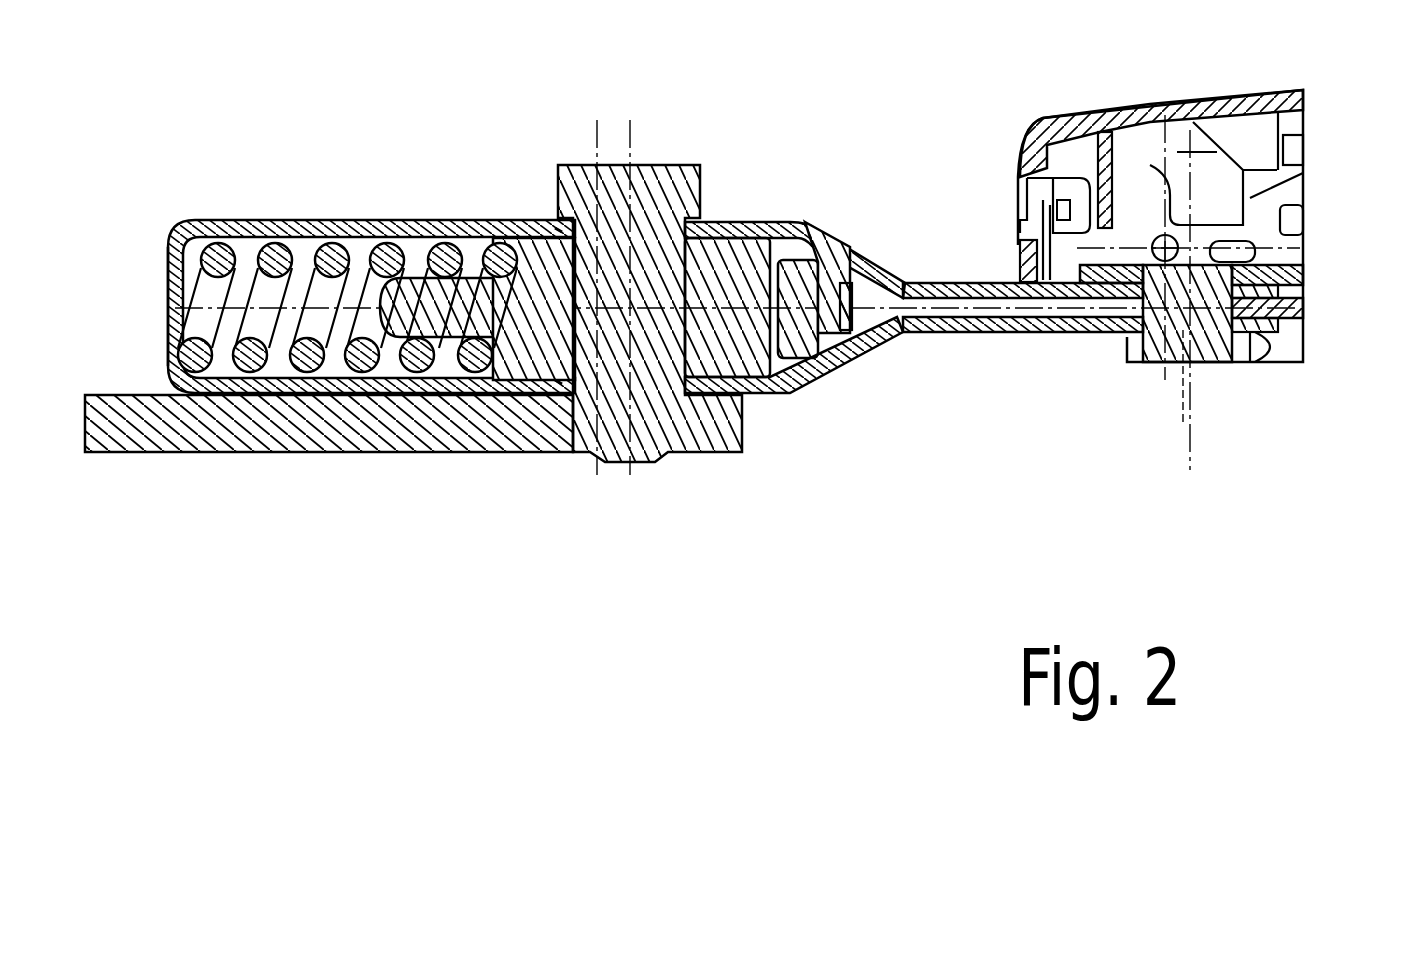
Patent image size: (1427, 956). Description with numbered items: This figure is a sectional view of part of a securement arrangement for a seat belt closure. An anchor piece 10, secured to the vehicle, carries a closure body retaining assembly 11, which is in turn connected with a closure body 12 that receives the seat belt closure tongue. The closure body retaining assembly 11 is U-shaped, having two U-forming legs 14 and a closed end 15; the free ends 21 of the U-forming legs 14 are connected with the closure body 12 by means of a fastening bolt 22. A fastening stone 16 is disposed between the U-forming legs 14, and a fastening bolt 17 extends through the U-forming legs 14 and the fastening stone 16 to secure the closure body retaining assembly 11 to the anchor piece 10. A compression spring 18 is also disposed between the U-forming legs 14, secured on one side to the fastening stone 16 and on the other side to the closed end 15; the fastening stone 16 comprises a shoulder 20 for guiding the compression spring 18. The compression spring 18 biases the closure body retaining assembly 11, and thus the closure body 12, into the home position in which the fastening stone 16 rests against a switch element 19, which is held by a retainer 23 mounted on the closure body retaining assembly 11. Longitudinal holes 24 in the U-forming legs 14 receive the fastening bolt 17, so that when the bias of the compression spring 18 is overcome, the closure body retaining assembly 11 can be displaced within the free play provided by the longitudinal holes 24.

The anchor piece 10 is at (160, 425).
The closure body retaining assembly 11 is at (740, 190).
The closure body 12 is at (1248, 200).
The U-forming legs 14 is at (315, 222).
The closed end 15 is at (165, 290).
The fastening stone 16 is at (720, 337).
The fastening bolt 17 is at (560, 165).
The compression spring 18 is at (268, 240).
The switch element 19 is at (823, 368).
The shoulder 20 is at (428, 300).
The free ends of the U-forming legs 21 is at (1090, 345).
The fastening bolt 22 is at (1200, 362).
The retainer 23 is at (828, 266).
The longitudinal holes 24 is at (555, 228).